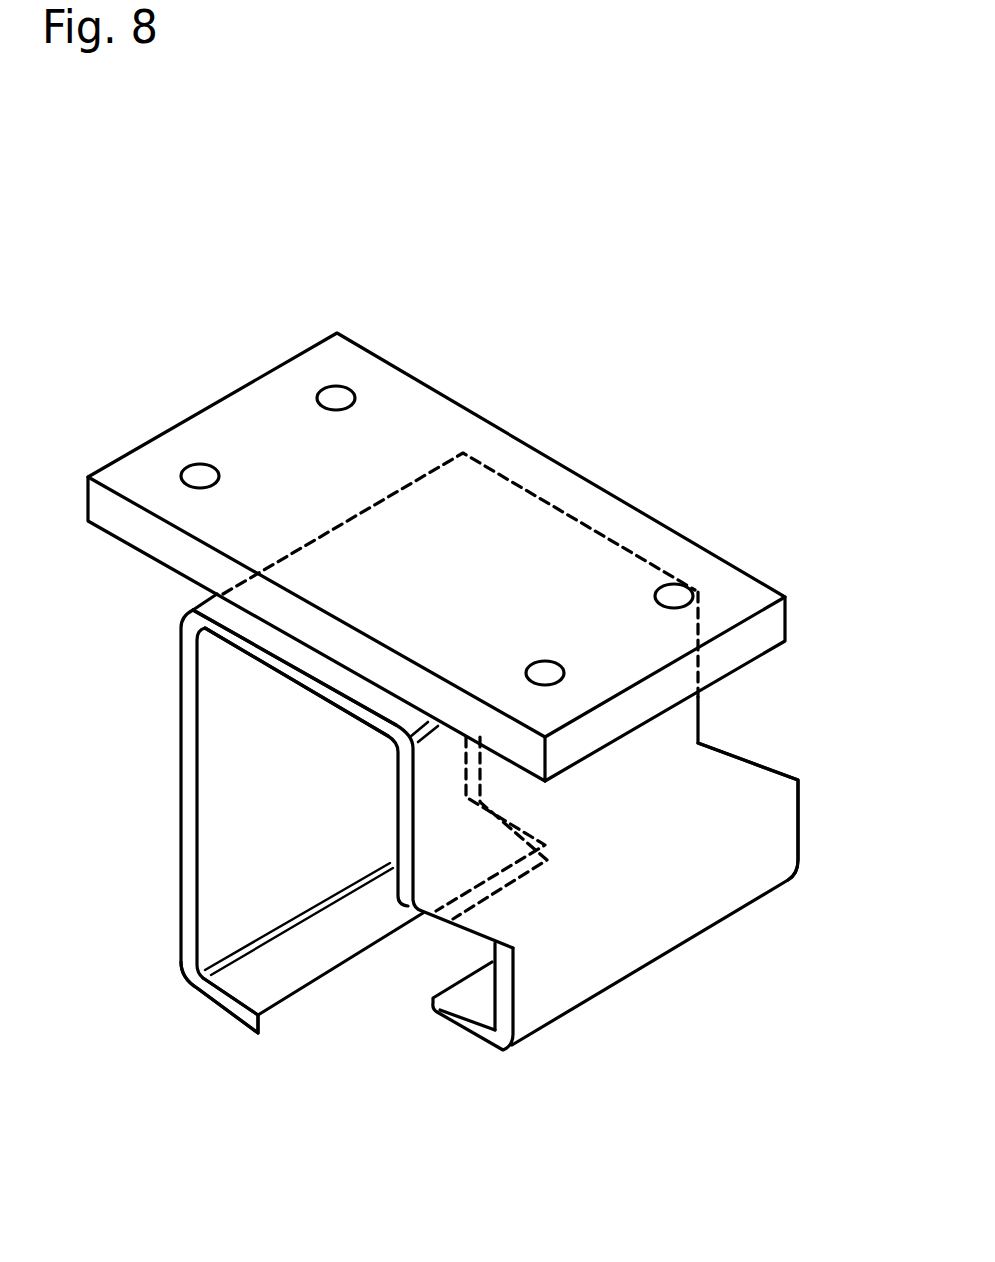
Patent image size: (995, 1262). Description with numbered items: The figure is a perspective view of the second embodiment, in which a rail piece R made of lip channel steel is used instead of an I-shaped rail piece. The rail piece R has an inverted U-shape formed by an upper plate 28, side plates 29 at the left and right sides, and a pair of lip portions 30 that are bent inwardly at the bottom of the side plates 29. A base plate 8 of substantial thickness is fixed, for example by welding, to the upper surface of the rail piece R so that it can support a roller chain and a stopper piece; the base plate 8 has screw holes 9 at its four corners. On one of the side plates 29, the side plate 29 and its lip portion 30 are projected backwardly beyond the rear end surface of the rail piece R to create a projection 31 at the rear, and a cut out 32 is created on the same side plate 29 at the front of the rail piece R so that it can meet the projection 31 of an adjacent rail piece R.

The base plate 8 is at (428, 410).
The screw holes 9 is at (196, 480).
The rail piece R is at (176, 770).
The upper plate 28 is at (303, 677).
The side plates 29 is at (572, 903).
The lip portions 30 is at (277, 969).
The projection 31 is at (766, 840).
The cut out 32 is at (460, 1036).